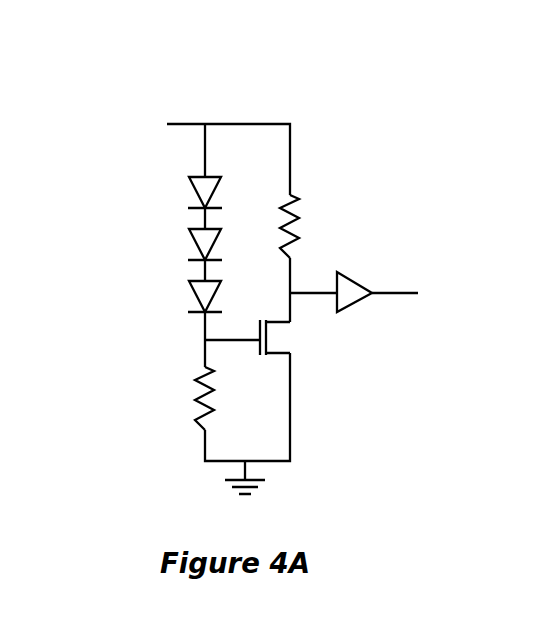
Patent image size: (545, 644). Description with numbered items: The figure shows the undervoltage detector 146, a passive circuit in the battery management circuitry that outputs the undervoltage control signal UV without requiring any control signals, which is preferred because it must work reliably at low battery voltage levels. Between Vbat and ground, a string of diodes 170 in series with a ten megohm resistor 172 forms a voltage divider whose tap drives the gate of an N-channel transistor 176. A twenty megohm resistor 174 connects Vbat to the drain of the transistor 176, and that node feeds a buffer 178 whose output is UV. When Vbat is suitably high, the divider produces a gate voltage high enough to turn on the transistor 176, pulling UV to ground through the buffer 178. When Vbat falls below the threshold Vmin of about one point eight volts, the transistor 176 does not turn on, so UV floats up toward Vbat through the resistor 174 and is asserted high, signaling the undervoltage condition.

The undervoltage detector 146 is at (271, 76).
The diodes 170 is at (183, 244).
The resistor 172 is at (180, 398).
The resistor 174 is at (311, 226).
The N-channel transistor 176 is at (267, 337).
The buffer 178 is at (352, 280).